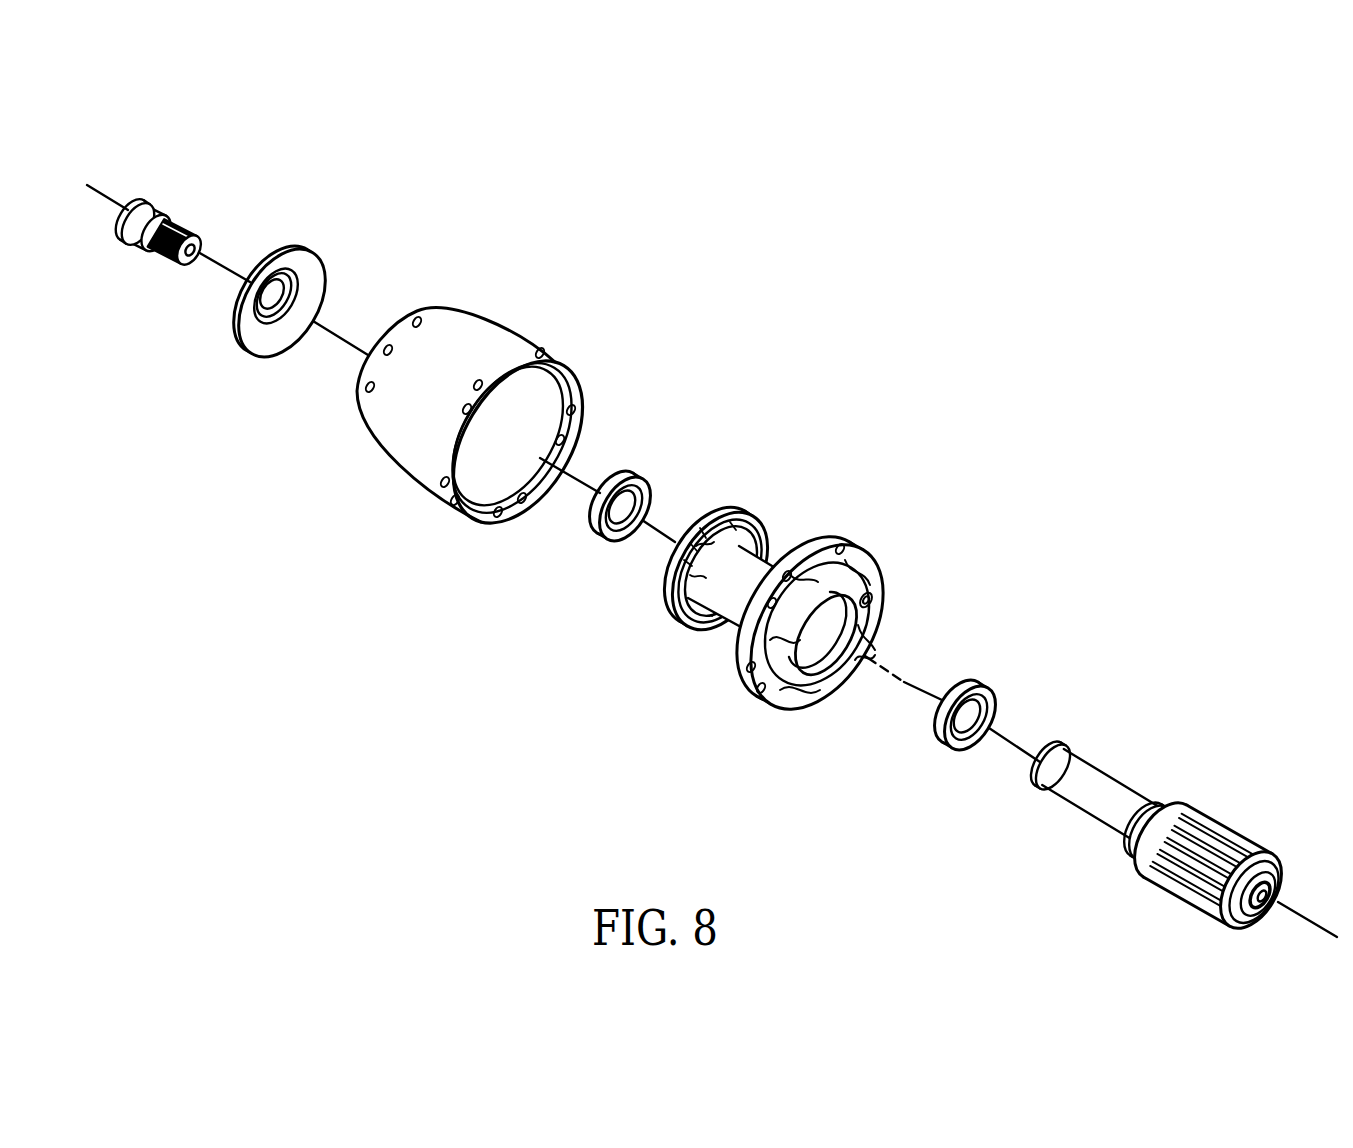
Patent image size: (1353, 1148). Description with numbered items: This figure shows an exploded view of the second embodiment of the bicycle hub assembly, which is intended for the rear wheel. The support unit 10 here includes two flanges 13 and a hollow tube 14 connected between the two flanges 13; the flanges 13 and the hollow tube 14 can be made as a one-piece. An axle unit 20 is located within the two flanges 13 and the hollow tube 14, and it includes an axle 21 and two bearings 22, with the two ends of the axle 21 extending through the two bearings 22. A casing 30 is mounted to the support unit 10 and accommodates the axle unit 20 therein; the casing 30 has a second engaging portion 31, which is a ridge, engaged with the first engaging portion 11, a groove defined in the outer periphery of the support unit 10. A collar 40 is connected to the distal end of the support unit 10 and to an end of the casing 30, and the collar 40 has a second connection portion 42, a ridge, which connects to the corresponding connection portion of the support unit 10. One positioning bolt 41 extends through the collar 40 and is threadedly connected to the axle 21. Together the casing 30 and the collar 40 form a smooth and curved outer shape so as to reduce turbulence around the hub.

The support unit 10 is at (767, 575).
The first engaging portion 11 is at (761, 596).
The flange 13 is at (778, 585).
The hollow tube 14 is at (745, 572).
The axle unit 20 is at (1159, 757).
The axle 21 is at (1105, 790).
The bearing 22 is at (628, 477).
The casing 30 is at (501, 401).
The second engaging portion 31 is at (557, 393).
The collar 40 is at (290, 271).
The positioning bolt 41 is at (160, 198).
The second connection portion 42 is at (311, 257).